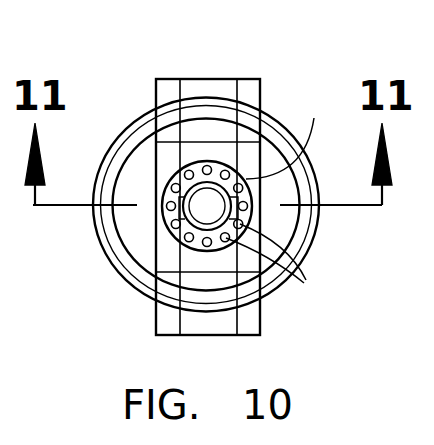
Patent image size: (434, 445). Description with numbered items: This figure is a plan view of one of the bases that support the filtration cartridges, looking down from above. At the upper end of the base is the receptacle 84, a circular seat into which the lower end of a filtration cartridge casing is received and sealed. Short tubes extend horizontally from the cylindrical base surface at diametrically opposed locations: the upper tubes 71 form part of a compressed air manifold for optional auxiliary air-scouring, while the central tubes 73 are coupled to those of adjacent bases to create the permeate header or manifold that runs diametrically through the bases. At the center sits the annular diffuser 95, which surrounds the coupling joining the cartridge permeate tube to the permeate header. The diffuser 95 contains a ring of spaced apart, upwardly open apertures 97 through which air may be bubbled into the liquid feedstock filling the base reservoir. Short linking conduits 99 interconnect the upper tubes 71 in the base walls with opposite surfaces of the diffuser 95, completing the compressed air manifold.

The upper tubes 71 is at (206, 86).
The central tubes 73 is at (155, 88).
The receptacle 84 is at (152, 128).
The annular diffuser 95 is at (287, 134).
The apertures 97 is at (275, 268).
The linking conduits 99 is at (200, 272).